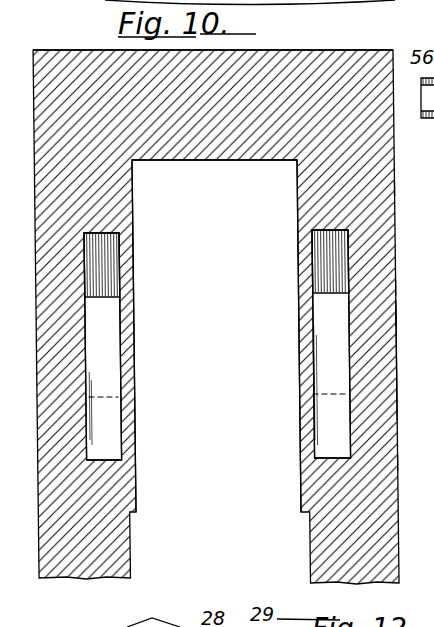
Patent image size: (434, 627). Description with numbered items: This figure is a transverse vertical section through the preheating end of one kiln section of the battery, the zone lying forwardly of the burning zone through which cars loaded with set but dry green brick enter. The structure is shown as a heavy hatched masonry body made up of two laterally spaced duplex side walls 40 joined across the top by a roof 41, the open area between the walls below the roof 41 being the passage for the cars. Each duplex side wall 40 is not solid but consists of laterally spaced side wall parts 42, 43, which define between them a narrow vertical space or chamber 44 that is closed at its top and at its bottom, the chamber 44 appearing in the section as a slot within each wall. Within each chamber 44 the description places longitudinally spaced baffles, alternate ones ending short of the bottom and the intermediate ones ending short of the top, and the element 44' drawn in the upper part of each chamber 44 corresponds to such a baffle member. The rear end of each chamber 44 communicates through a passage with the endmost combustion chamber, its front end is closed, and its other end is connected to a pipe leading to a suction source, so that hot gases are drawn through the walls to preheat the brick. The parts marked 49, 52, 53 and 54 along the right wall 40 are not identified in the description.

The duplex side wall 40 is at (385, 251).
The roof 41 is at (314, 50).
The side wall part 42 is at (387, 368).
The side wall part 43 is at (135, 383).
The space or chamber 44 is at (258, 342).
The slot insert 44' is at (258, 263).
The side portion 49 is at (415, 287).
The side portion 52 is at (414, 317).
The upper side portion 53 is at (413, 188).
The lower side portion 54 is at (416, 462).